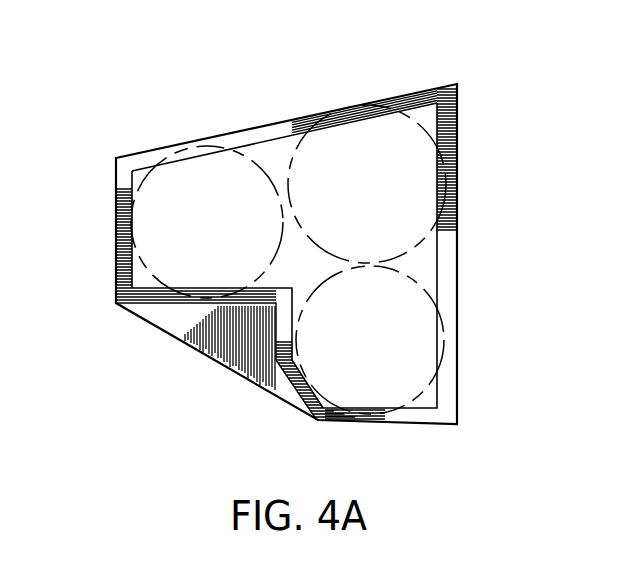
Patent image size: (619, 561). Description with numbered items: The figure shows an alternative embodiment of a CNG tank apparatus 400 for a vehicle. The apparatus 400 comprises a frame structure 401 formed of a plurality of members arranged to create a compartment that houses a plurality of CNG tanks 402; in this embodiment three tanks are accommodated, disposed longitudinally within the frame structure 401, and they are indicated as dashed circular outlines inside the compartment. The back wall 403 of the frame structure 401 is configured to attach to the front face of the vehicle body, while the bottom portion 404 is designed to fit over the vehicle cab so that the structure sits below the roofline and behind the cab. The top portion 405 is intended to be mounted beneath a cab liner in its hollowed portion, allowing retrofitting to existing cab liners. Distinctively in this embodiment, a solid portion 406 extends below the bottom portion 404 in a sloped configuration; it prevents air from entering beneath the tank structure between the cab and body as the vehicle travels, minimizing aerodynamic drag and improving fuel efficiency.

The CNG tank apparatus 400 is at (479, 127).
The frame structure 401 is at (113, 255).
The CNG tanks 402 is at (185, 200).
The back wall 403 is at (461, 380).
The bottom portion 404 is at (205, 306).
The top portion 405 is at (234, 131).
The solid portion 406 is at (147, 323).